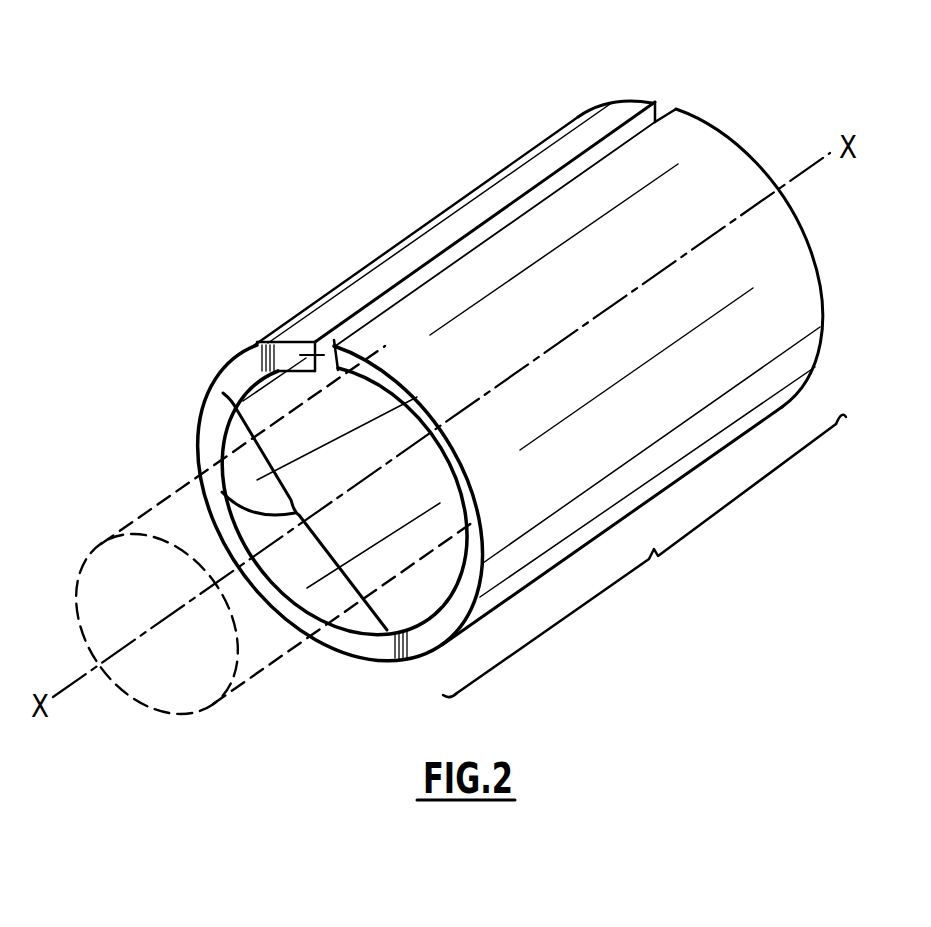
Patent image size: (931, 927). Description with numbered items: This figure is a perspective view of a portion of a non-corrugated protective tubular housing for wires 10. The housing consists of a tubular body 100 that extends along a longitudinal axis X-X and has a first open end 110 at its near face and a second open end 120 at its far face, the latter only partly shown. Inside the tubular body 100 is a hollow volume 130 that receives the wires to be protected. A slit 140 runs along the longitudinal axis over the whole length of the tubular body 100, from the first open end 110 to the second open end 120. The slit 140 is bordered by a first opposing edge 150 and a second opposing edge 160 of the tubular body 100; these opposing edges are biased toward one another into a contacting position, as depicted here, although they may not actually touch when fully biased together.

The non-corrugated protective tubular housing for wires 10 is at (456, 158).
The tubular body 100 is at (644, 556).
The first open end 110 is at (238, 398).
The second open end 120 is at (637, 101).
The hollow volume 130 is at (210, 470).
The slit 140 is at (433, 258).
The first opposing edge 150 is at (302, 355).
The second opposing edge 160 is at (336, 342).